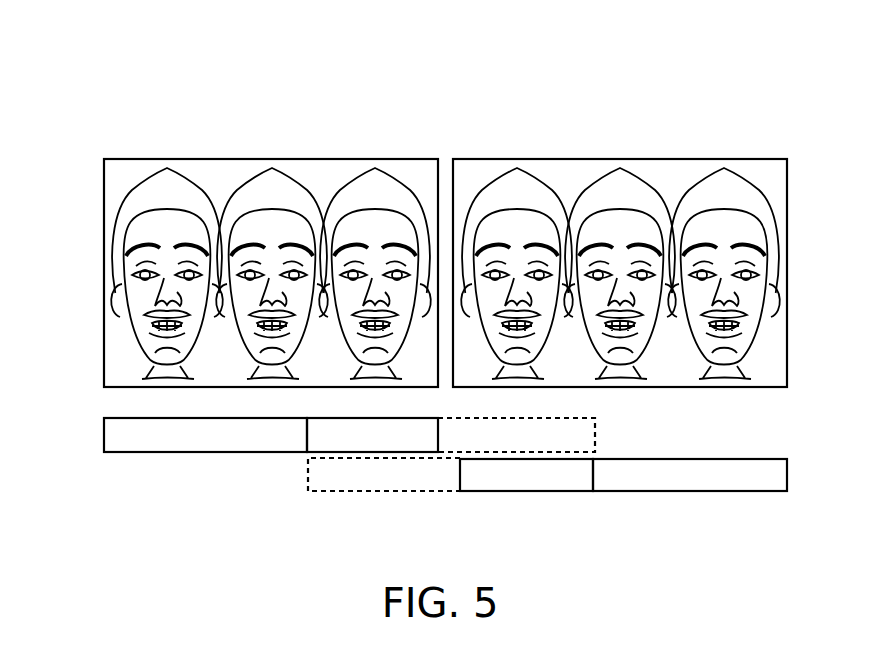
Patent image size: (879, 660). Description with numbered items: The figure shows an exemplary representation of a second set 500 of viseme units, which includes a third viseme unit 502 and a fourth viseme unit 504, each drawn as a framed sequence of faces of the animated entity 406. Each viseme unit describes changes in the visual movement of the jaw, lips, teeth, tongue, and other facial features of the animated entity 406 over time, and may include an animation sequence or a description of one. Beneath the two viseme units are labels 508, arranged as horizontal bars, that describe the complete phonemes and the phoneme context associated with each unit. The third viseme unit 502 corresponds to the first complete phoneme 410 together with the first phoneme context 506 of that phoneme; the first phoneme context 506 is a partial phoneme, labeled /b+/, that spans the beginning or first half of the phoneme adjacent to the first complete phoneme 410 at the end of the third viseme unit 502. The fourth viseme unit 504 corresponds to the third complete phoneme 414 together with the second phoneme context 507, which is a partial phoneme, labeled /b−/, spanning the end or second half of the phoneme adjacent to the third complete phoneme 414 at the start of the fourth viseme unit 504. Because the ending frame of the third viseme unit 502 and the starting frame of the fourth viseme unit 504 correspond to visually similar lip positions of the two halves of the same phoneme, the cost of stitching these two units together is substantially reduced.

The second set of viseme units 500 is at (410, 75).
The third viseme unit 502 is at (165, 158).
The fourth viseme unit 504 is at (560, 157).
The animated entity 406 is at (123, 256).
The labels 508 is at (84, 442).
The first complete phoneme 410 is at (207, 452).
The first phoneme context 506 is at (372, 452).
The second phoneme context 507 is at (533, 491).
The third complete phoneme 414 is at (710, 490).